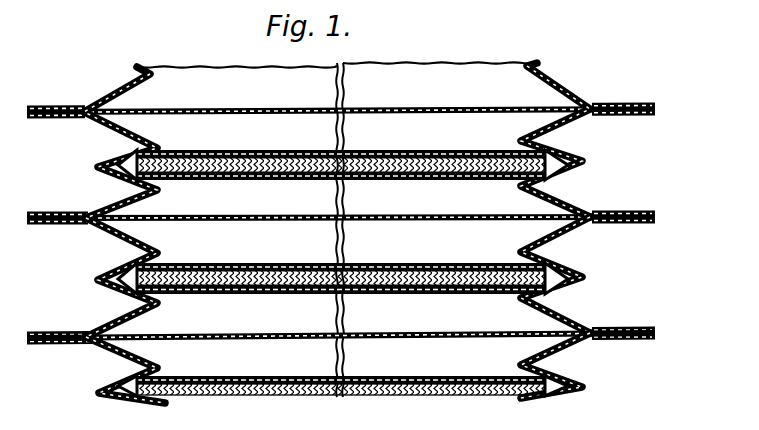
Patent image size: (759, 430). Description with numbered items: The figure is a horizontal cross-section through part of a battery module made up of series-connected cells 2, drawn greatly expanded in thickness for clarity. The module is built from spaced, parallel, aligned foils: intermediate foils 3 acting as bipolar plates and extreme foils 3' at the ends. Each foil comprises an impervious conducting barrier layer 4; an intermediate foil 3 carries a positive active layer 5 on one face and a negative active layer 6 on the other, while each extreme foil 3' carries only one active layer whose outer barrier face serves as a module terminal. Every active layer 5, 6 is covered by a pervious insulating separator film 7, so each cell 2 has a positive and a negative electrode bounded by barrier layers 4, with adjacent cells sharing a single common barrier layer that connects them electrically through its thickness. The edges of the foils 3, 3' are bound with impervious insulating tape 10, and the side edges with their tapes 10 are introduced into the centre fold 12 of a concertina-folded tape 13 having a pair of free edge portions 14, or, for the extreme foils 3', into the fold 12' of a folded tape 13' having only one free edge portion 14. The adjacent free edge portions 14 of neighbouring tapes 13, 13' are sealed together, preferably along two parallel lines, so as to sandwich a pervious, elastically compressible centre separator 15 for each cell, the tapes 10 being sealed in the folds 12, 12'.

The cell 2 is at (157, 233).
The intermediate foil 3 is at (341, 241).
The extreme foil 3' is at (341, 394).
The barrier layer 4 is at (194, 292).
The positive active layer 5 is at (427, 263).
The negative active layer 6 is at (439, 292).
The separator film 7 is at (313, 293).
The insulating tape 10 is at (570, 163).
The centre fold 12 is at (583, 222).
The fold 12' is at (559, 402).
The concertina-folded tape 13 is at (582, 140).
The folded tape 13' is at (582, 368).
The free edge portion 14 is at (631, 226).
The centre separator 15 is at (245, 332).